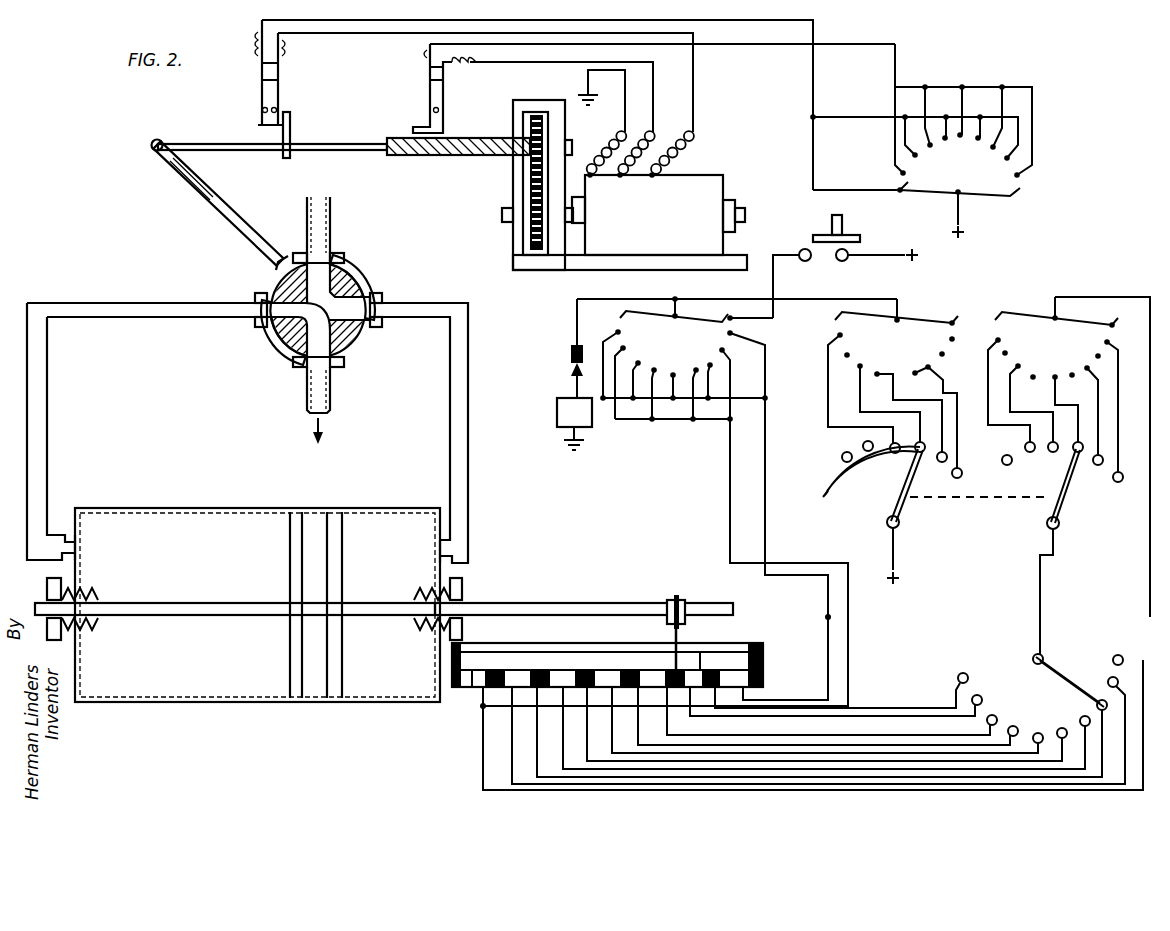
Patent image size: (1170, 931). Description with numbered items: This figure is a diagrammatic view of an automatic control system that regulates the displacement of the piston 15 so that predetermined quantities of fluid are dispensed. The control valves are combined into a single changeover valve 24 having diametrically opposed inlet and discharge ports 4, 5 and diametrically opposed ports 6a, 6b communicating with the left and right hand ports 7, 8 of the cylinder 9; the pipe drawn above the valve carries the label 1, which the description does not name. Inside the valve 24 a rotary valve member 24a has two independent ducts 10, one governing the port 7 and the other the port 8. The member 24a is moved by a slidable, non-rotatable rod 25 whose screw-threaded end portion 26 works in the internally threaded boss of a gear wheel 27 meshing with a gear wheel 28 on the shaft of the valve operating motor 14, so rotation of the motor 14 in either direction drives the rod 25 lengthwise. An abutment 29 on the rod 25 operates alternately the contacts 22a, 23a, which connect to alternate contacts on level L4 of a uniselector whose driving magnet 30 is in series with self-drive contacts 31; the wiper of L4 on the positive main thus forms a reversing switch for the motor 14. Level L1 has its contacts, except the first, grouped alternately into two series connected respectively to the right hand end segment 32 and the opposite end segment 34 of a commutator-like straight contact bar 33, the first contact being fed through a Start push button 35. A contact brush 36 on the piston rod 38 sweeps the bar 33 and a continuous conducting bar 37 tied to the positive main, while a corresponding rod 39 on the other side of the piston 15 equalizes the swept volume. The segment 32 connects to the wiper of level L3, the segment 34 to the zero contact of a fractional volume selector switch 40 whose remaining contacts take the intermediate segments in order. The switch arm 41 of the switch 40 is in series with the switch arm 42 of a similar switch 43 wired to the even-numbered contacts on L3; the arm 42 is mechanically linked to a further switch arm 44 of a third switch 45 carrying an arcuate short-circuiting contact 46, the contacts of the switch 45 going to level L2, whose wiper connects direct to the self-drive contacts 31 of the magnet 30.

The inlet pipe 1 is at (307, 214).
The inlet port 4 is at (326, 252).
The discharge port 5 is at (322, 375).
The valve port 6a is at (270, 325).
The valve port 6b is at (372, 322).
The left hand cylinder port 7 is at (81, 548).
The right hand cylinder port 8 is at (432, 551).
The cylinder 9 is at (196, 564).
The ducts 10 is at (348, 343).
The valve operating motor 14 is at (664, 224).
The piston 15 is at (290, 650).
The contact 22a is at (262, 105).
The contact 23a is at (430, 104).
The changeover valve unit 24 is at (366, 276).
The rotary valve member 24a is at (272, 284).
The valve operating rod 25 is at (348, 150).
The screw-threaded end portion 26 is at (468, 156).
The gear wheel 27 is at (532, 128).
The gear wheel 28 is at (532, 227).
The abutment 29 is at (291, 134).
The driving magnet 30 is at (557, 419).
The self-drive contacts 31 is at (570, 357).
The right hand end segment 32 is at (765, 678).
The contact bar 33 is at (468, 688).
The end conducting segment 34 is at (480, 672).
The Start push button 35 is at (830, 230).
The contact brush 36 is at (673, 668).
The continuous conducting bar 37 is at (707, 652).
The piston rod 38 is at (574, 608).
The rod 39 is at (207, 605).
The fractional volume rotary selector switch 40 is at (1034, 712).
The switch arm 41 is at (1066, 683).
The switch arm 42 is at (1066, 492).
The rotary selector switch 43 is at (1053, 494).
The switch arm 44 is at (907, 492).
The third rotary selector switch 45 is at (888, 494).
The arcuate short-circuiting contact 46 is at (828, 497).
The uniselector level L1 is at (676, 356).
The uniselector level L2 is at (908, 354).
The uniselector level L3 is at (1066, 354).
The uniselector level L4 is at (970, 176).